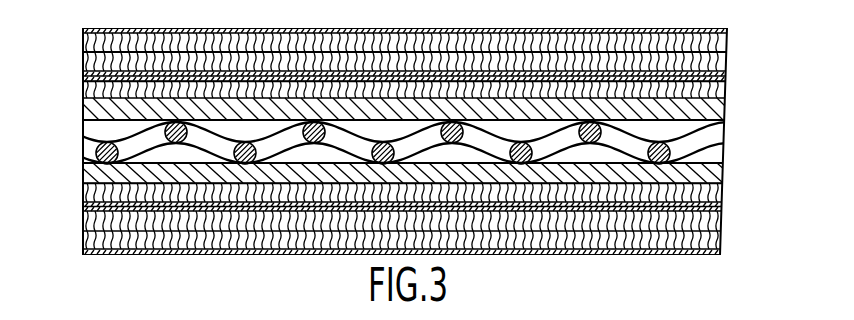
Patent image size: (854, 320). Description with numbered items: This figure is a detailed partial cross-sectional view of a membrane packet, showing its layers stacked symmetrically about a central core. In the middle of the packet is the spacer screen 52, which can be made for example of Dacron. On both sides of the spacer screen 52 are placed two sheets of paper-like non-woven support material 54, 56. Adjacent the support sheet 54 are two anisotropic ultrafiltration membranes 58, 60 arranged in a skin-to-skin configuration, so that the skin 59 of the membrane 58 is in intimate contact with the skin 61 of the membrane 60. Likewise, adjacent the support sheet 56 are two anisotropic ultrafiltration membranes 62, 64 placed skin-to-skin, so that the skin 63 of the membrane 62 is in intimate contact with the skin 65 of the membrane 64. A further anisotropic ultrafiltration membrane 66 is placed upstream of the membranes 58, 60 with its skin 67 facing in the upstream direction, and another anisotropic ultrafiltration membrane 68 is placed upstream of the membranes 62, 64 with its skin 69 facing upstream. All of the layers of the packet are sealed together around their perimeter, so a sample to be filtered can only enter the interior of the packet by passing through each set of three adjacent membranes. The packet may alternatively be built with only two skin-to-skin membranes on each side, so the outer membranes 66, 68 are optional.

The spacer screen 52 is at (710, 146).
The non-woven support material sheet 54 is at (85, 108).
The non-woven support material sheet 56 is at (88, 175).
The anisotropic ultrafiltration membrane 58 is at (720, 88).
The skin of membrane 58 59 is at (96, 86).
The anisotropic ultrafiltration membrane 60 is at (722, 63).
The skin of membrane 60 61 is at (97, 74).
The anisotropic ultrafiltration membrane 62 is at (722, 191).
The skin of membrane 62 63 is at (96, 189).
The anisotropic ultrafiltration membrane 64 is at (718, 217).
The skin of membrane 64 65 is at (90, 207).
The anisotropic ultrafiltration membrane 66 is at (722, 42).
The skin of membrane 66 67 is at (100, 28).
The anisotropic ultrafiltration membrane 68 is at (716, 238).
The skin of membrane 68 69 is at (88, 253).